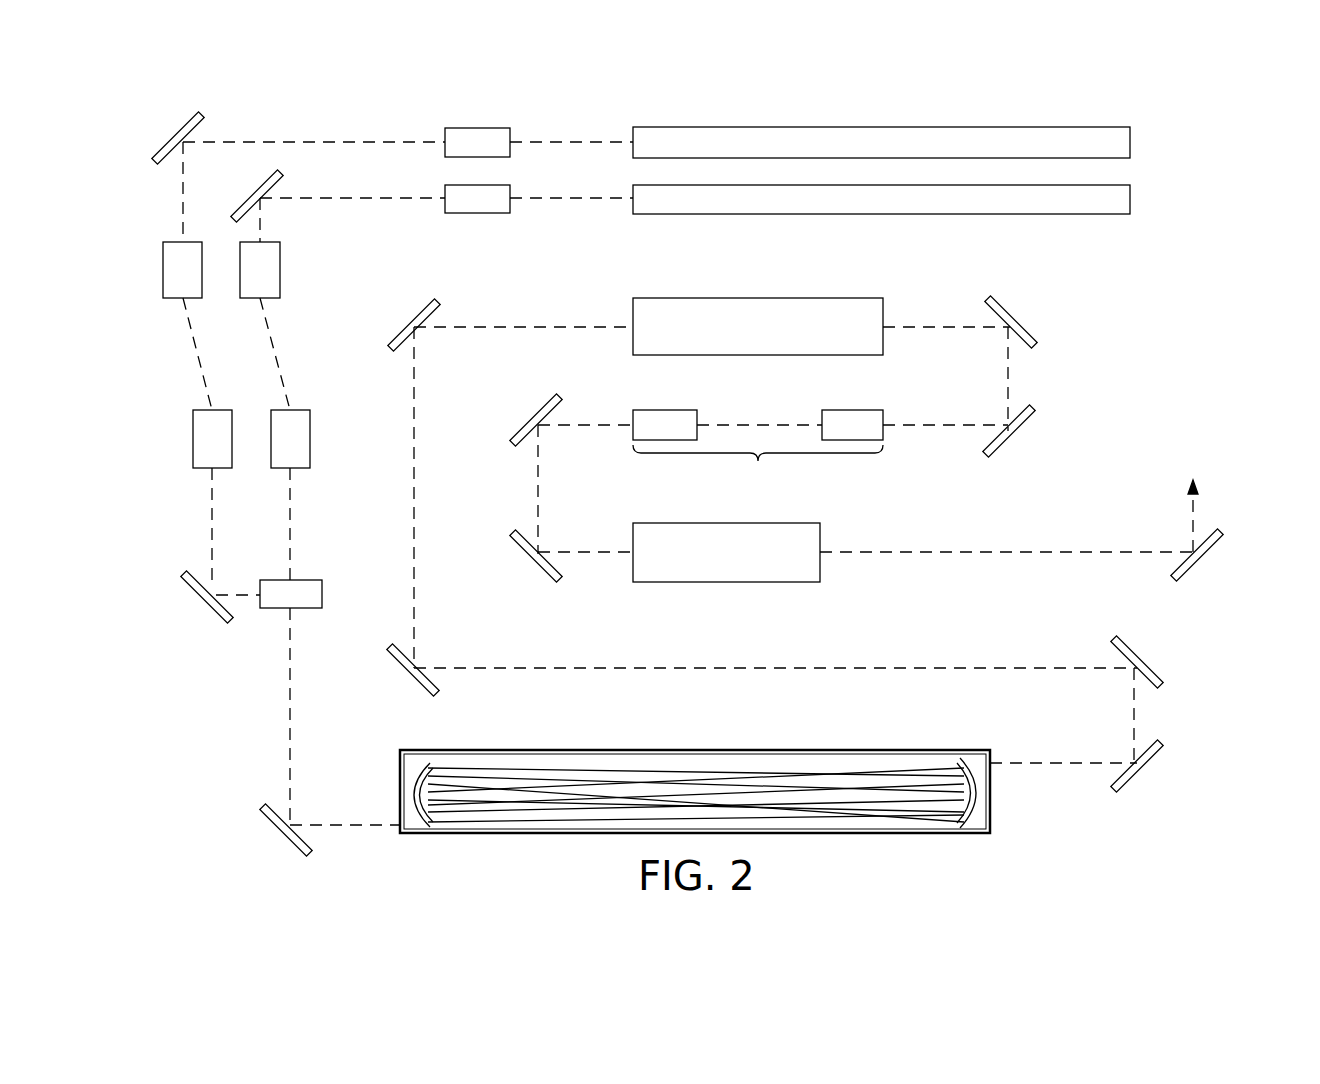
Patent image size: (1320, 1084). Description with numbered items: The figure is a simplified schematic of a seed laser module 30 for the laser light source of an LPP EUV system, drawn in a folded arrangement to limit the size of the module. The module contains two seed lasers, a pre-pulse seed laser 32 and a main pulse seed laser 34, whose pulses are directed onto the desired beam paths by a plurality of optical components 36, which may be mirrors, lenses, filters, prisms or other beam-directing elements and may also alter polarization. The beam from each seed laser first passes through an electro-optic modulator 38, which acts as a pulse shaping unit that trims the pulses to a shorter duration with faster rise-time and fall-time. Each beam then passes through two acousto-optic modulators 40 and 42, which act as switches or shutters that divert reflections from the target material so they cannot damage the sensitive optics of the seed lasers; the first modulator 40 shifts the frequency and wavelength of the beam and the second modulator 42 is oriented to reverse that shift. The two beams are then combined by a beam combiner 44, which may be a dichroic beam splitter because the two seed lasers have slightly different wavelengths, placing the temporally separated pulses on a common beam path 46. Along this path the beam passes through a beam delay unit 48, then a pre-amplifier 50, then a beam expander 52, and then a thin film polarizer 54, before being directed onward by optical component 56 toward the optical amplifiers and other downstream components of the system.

The seed laser module 30 is at (1097, 304).
The pre-pulse seed laser 32 is at (881, 142).
The main pulse seed laser 34 is at (881, 199).
The optical components 36 is at (223, 122).
The electro-optic modulator 38 is at (477, 170).
The acousto-optic modulator 40 is at (221, 270).
The acousto-optic modulator 42 is at (251, 439).
The beam combiner 44 is at (291, 594).
The common beam path 46 is at (286, 681).
The beam delay unit 48 is at (393, 754).
The pre-amplifier 50 is at (758, 326).
The beam expander 52 is at (758, 449).
The thin film polarizer 54 is at (726, 552).
The optical component 56 is at (1174, 536).